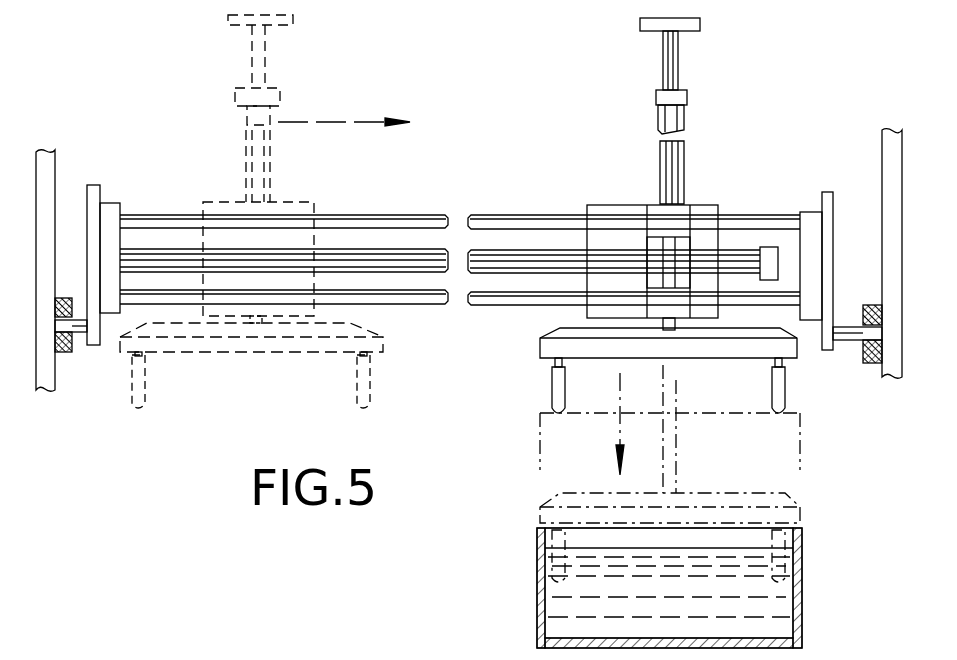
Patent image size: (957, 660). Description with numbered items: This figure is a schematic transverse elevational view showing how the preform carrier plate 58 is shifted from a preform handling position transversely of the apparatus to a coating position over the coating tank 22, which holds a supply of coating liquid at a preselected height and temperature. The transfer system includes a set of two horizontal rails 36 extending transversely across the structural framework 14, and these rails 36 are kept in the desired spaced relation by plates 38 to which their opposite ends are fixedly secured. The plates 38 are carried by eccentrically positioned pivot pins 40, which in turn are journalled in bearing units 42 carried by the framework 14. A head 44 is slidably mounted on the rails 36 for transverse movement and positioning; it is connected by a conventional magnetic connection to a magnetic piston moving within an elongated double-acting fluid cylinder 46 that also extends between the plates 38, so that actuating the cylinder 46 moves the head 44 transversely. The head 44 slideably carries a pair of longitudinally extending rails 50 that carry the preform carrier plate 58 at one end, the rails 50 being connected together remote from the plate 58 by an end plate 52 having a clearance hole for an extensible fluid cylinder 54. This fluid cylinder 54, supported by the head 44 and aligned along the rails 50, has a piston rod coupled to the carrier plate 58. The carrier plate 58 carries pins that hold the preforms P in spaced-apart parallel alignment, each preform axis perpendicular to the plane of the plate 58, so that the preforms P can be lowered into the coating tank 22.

The structural framework 14 is at (58, 372).
The coating tank 22 is at (803, 603).
The horizontal rails 36 is at (430, 215).
The plates 38 is at (115, 208).
The pivot pins 40 is at (78, 328).
The bearing units 42 is at (65, 360).
The head 44 is at (627, 212).
The fluid cylinder 46 is at (380, 253).
The rails 50 is at (265, 70).
The end plate 52 is at (280, 27).
The extensible fluid cylinder 54 is at (268, 162).
The preform carrier plate 58 is at (302, 335).
The preforms P is at (552, 398).